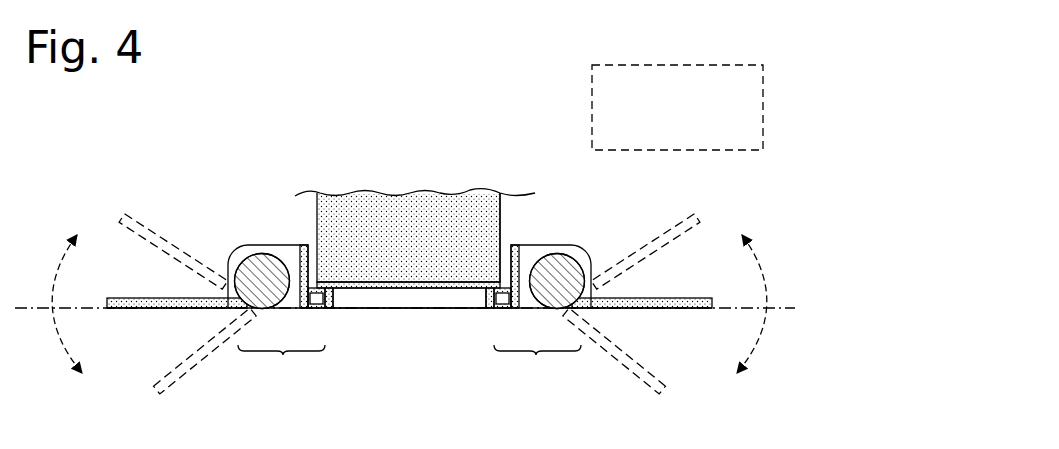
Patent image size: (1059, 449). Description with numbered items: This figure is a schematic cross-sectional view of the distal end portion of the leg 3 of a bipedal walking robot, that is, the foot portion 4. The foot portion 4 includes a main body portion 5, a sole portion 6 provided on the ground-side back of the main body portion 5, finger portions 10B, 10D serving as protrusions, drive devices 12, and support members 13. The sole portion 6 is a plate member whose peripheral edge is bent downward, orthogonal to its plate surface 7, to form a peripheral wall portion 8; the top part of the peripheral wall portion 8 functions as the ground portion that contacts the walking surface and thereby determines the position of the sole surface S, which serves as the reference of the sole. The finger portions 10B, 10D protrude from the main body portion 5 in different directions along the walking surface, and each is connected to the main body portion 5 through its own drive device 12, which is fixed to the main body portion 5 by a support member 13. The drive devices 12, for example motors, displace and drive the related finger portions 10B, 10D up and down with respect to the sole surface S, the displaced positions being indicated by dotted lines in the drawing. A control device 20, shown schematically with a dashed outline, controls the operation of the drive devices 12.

The leg 3 is at (476, 190).
The foot portion 4 is at (313, 235).
The main body portion 5 is at (500, 230).
The sole portion 6 is at (395, 283).
The plate surface 7 is at (406, 300).
The peripheral wall portion 8 is at (332, 308).
The finger portion 10B is at (667, 227).
The finger portion 10D is at (153, 227).
The drive device 12 is at (262, 248).
The support member 13 is at (409, 366).
The control device 20 is at (738, 65).
The sole surface S is at (773, 308).